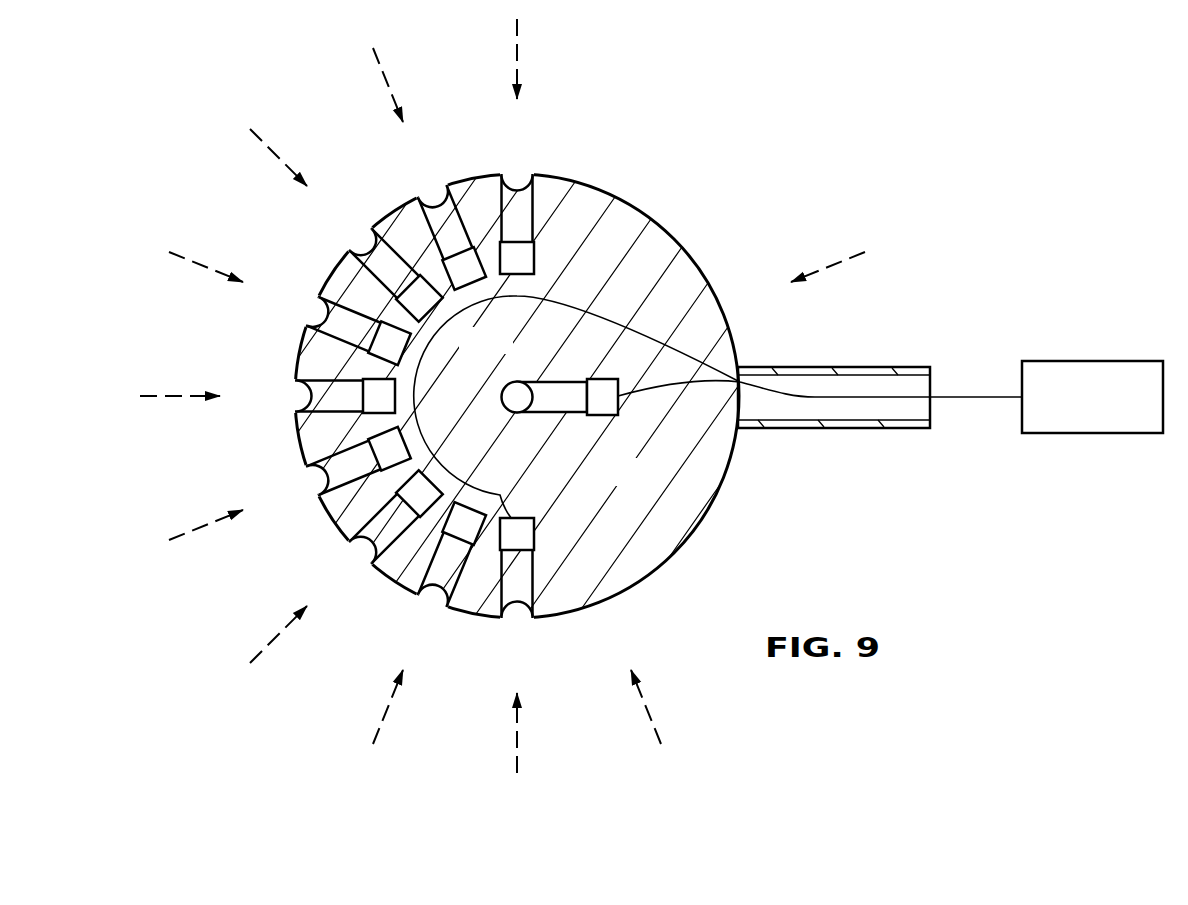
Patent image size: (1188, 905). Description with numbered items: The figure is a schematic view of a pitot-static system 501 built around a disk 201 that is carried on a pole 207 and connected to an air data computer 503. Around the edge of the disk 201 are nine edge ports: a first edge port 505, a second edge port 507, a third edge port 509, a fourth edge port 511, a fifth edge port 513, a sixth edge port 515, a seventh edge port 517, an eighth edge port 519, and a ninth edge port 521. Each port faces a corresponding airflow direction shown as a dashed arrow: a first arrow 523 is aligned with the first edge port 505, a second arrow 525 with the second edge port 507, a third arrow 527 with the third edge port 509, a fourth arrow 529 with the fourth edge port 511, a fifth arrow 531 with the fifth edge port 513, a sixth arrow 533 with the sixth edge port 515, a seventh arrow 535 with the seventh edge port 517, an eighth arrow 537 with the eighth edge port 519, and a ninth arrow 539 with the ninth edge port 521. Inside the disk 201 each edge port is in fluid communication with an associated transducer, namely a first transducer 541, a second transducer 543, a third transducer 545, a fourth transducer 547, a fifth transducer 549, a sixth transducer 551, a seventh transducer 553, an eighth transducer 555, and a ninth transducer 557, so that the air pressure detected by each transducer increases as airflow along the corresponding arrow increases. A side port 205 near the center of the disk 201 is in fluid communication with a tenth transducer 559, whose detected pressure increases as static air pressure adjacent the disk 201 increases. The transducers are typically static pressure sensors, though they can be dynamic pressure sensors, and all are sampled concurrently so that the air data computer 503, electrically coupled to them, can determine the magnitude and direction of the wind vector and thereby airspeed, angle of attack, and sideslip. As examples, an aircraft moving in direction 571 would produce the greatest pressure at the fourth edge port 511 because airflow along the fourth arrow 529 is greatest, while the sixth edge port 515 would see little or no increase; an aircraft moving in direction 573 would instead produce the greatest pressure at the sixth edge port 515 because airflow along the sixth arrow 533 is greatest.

The disk 201 is at (688, 545).
The side port 205 is at (555, 407).
The pole 207 is at (862, 430).
The pitot-static system 501 is at (685, 378).
The air data computer 503 is at (1092, 361).
The first edge port 505 is at (293, 403).
The second edge port 507 is at (308, 303).
The third edge port 509 is at (352, 237).
The fourth edge port 511 is at (427, 185).
The fifth edge port 513 is at (507, 150).
The sixth edge port 515 is at (310, 488).
The seventh edge port 517 is at (358, 562).
The eighth edge port 519 is at (430, 606).
The ninth edge port 521 is at (520, 622).
The first arrow 523 is at (173, 398).
The second arrow 525 is at (198, 265).
The third arrow 527 is at (272, 152).
The fourth arrow 529 is at (380, 65).
The fifth arrow 531 is at (515, 52).
The sixth arrow 533 is at (213, 522).
The seventh arrow 535 is at (285, 628).
The eighth arrow 537 is at (388, 710).
The ninth arrow 539 is at (517, 738).
The first transducer 541 is at (364, 404).
The second transducer 543 is at (372, 342).
The third transducer 545 is at (405, 286).
The fourth transducer 547 is at (460, 250).
The fifth transducer 549 is at (535, 250).
The sixth transducer 551 is at (374, 455).
The seventh transducer 553 is at (412, 512).
The eighth transducer 555 is at (470, 541).
The ninth transducer 557 is at (535, 545).
The tenth transducer 559 is at (602, 417).
The direction 571 is at (645, 705).
The direction 573 is at (826, 268).